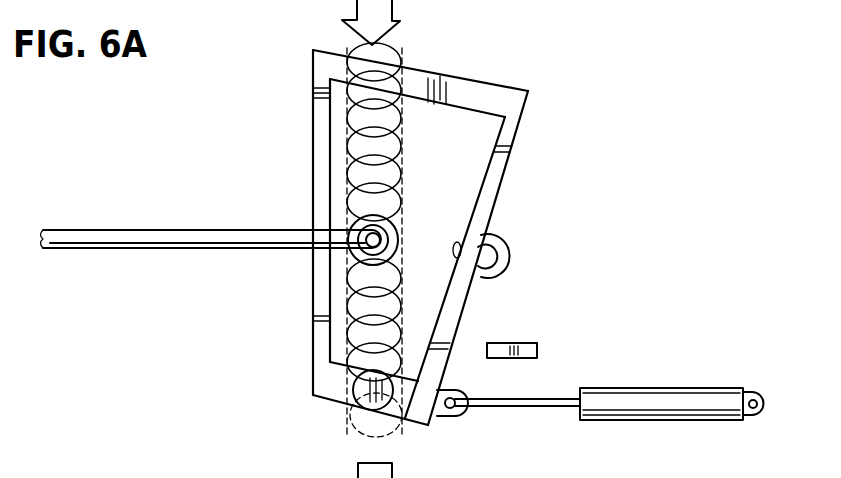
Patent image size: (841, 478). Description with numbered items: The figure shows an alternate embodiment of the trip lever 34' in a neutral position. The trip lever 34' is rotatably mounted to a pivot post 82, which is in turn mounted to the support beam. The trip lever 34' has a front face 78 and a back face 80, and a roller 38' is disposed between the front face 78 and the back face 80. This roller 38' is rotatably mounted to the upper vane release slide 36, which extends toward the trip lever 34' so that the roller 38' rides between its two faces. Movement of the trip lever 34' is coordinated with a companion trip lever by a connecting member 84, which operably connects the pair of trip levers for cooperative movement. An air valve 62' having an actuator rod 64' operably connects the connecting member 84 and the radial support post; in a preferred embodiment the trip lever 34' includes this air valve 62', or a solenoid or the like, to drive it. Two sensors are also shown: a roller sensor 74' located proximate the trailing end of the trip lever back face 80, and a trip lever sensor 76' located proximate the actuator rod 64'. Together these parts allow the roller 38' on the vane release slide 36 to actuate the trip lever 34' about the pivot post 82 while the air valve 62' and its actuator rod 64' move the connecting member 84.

The trip lever 34' is at (414, 251).
The upper vane release slide 36 is at (188, 243).
The roller 38' is at (404, 240).
The front face 78 is at (312, 313).
The back face 80 is at (506, 161).
The pivot post 82 is at (500, 248).
The connecting member 84 is at (437, 392).
The trip lever sensor 76' is at (530, 321).
The actuator rod 64' is at (523, 373).
The air valve 62' is at (672, 375).
The roller sensor 74' is at (396, 419).